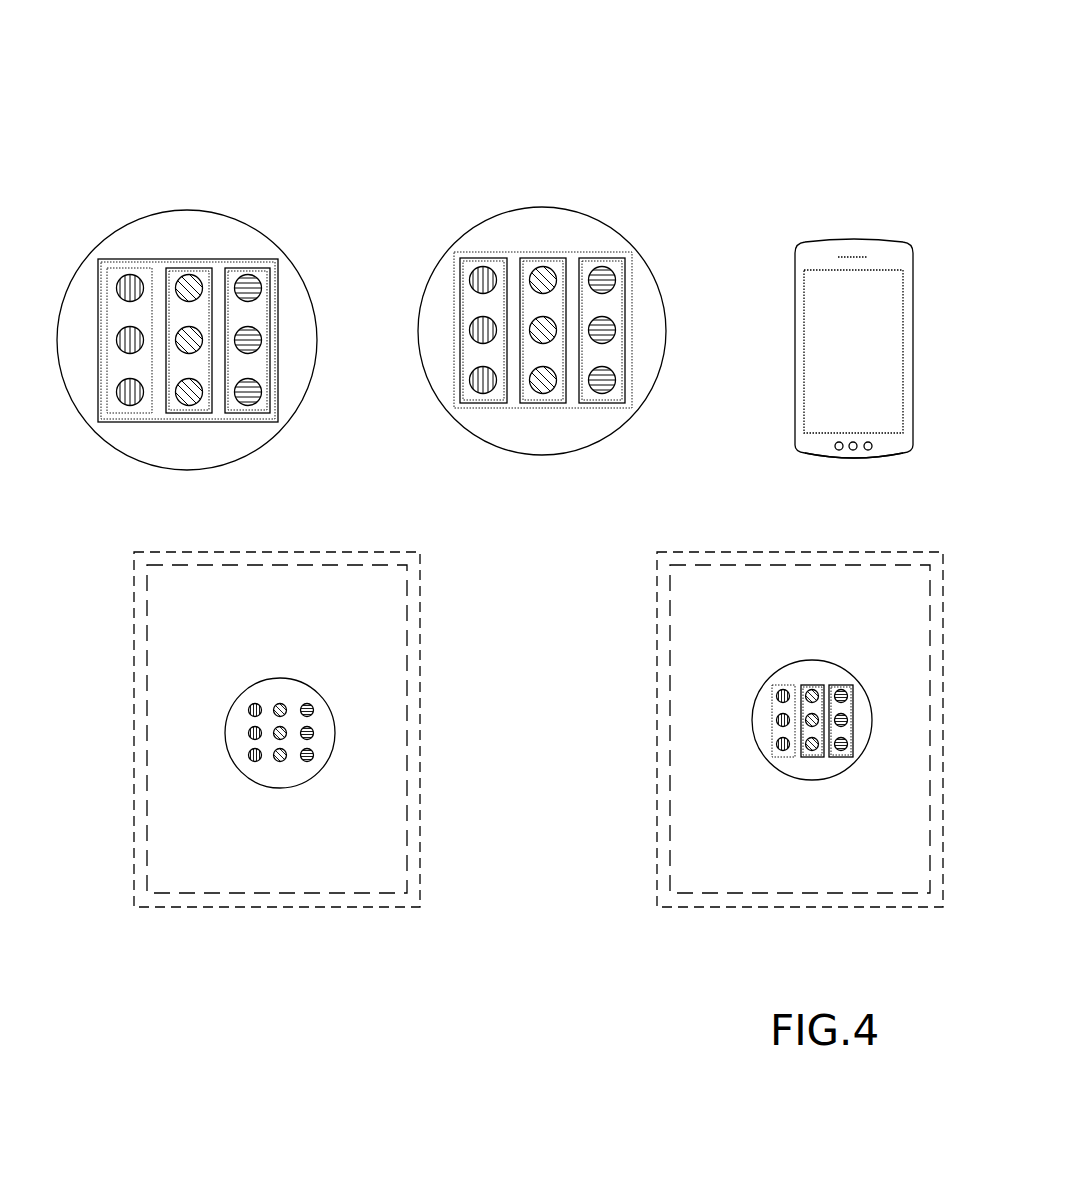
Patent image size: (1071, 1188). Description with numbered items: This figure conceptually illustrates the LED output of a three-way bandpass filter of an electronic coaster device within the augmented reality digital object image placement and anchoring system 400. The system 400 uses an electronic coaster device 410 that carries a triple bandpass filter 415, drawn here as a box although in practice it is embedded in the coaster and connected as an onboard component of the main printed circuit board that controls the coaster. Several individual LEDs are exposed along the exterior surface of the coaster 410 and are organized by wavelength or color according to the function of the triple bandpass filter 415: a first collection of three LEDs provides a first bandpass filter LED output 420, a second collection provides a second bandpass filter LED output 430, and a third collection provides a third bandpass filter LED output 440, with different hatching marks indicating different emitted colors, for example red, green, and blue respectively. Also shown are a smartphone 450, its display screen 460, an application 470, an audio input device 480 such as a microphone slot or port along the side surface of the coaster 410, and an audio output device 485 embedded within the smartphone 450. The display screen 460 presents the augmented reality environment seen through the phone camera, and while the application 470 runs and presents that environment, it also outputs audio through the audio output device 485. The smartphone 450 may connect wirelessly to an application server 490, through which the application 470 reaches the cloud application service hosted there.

The augmented reality digital object image placement and anchoring system 400 is at (757, 70).
The electronic coaster device 410 is at (196, 459).
The triple bandpass filter 415 is at (258, 259).
The first bandpass filter LED output 420 is at (470, 330).
The second bandpass filter LED output 430 is at (545, 268).
The third bandpass filter LED output 440 is at (608, 380).
The smartphone 450 is at (878, 238).
The display screen 460 is at (813, 290).
The application 470 is at (900, 588).
The audio input device 480 is at (593, 443).
The audio output device 485 is at (908, 448).
The application server 490 is at (797, 447).